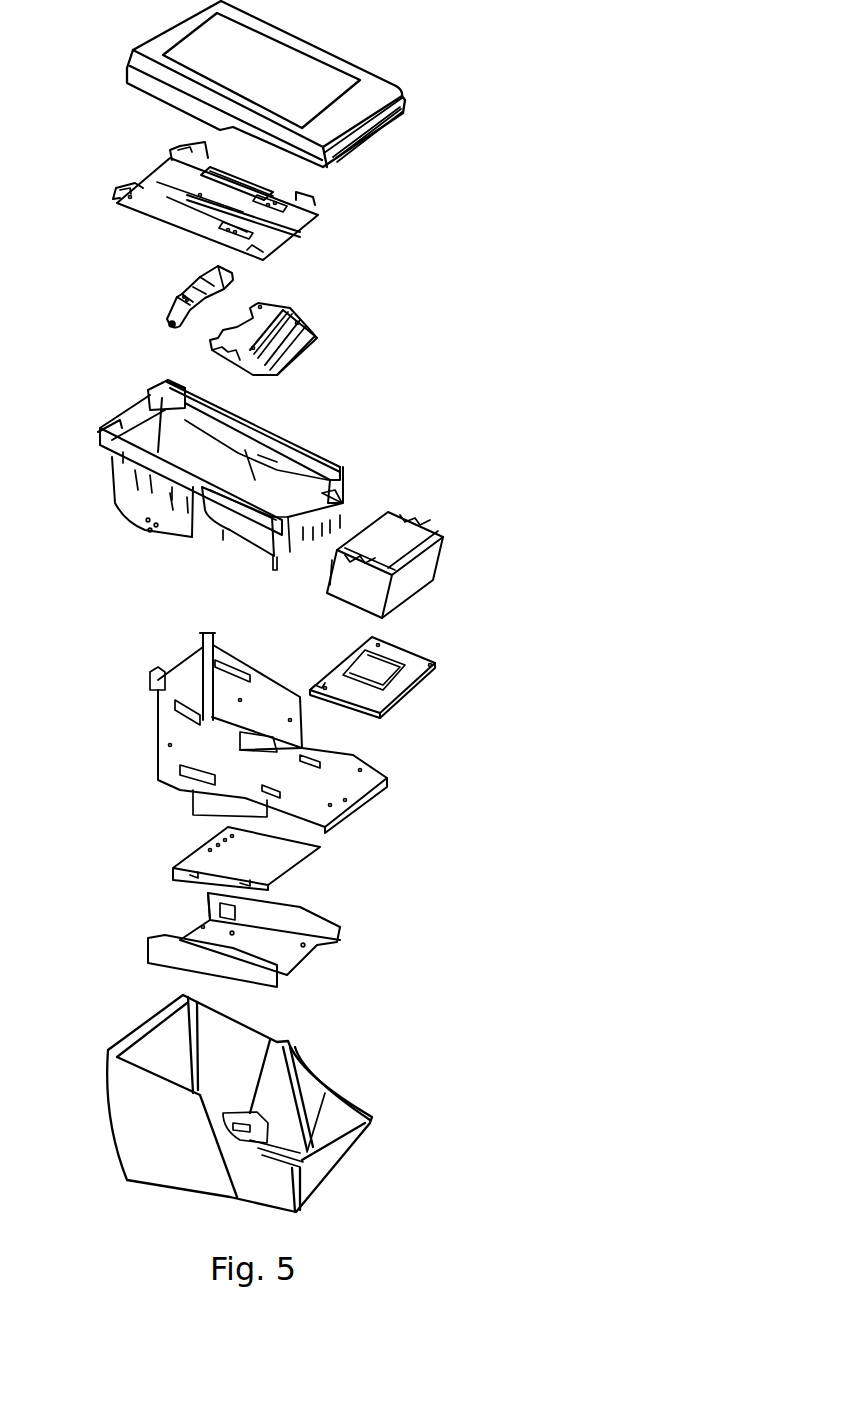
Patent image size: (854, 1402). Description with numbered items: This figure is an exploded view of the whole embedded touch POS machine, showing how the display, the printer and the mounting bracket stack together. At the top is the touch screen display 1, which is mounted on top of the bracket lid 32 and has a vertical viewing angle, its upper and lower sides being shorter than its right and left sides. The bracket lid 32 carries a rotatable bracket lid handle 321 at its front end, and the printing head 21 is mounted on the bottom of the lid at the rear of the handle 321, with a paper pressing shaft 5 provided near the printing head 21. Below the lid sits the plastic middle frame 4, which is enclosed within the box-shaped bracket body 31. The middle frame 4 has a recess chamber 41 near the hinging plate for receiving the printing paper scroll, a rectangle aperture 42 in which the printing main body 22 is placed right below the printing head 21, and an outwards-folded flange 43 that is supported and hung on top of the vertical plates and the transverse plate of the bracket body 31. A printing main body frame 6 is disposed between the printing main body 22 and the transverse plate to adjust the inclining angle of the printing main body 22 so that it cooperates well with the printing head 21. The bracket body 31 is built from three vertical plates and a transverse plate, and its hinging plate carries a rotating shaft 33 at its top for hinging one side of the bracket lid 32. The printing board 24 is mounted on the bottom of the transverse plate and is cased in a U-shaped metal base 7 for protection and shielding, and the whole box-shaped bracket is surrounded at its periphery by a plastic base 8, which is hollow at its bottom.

The touch screen display 1 is at (293, 77).
The bracket lid 32 is at (163, 190).
The paper pressing shaft 5 is at (183, 297).
The printing head 21 is at (267, 323).
The rotatable bracket lid handle 321 is at (293, 350).
The plastic middle frame 4 is at (307, 463).
The recess chamber 41 is at (177, 447).
The rectangle aperture 42 is at (283, 497).
The outwards-folded flange 43 is at (223, 530).
The printing main body 22 is at (427, 568).
The printing main body frame 6 is at (383, 687).
The box-shaped bracket body 31 is at (168, 727).
The rotating shaft 33 is at (157, 682).
The printing board 24 is at (270, 862).
The U-shaped metal base 7 is at (283, 960).
The plastic base 8 is at (223, 1048).